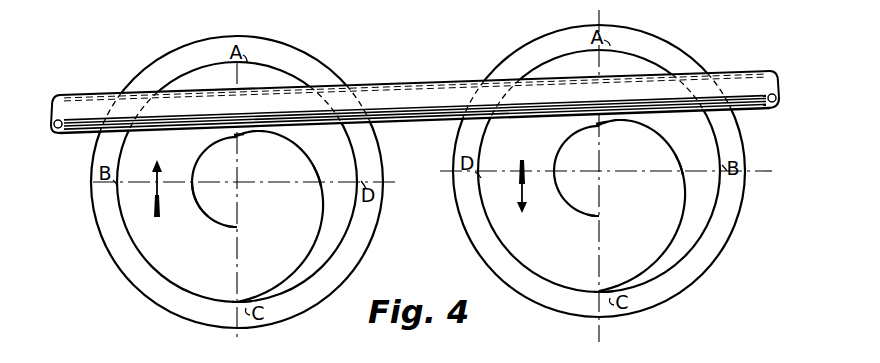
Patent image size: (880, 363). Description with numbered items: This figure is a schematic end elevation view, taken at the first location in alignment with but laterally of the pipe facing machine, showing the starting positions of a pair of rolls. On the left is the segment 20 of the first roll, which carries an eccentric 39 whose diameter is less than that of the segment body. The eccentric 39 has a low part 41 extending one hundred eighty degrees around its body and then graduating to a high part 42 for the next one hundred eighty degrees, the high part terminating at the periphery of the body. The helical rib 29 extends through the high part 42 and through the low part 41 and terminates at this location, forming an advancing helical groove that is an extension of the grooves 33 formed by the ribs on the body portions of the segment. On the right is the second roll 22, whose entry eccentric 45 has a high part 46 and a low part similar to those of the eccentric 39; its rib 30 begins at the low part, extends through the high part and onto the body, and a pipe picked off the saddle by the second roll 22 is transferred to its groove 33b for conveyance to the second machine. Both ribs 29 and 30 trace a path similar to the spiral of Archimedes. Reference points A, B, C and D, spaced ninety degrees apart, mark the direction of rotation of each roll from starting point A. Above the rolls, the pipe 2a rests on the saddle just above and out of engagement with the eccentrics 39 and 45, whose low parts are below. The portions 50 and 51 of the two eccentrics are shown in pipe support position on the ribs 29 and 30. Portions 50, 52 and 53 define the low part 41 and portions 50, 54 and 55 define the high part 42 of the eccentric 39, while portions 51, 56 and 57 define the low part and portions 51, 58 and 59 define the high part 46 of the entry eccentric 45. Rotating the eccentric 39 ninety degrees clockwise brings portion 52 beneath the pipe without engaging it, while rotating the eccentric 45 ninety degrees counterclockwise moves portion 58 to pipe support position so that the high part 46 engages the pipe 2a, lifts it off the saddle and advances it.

The pipe 2a is at (423, 82).
The segment 20 is at (192, 282).
The second roll 22 is at (568, 278).
The helical rib 29 is at (206, 152).
The rib 30 is at (573, 137).
The helical groove 33 is at (146, 262).
The groove 33b is at (708, 226).
The eccentric 39 is at (288, 216).
The low part 41 is at (207, 207).
The high part 42 is at (290, 163).
The entry eccentric 45 is at (649, 205).
The high part 46 is at (662, 153).
The portion 50 is at (244, 134).
The portion 51 is at (604, 122).
The portion 52 is at (191, 182).
The portion 53 is at (236, 230).
The portion 54 is at (314, 180).
The portion 55 is at (244, 302).
The portion 56 is at (555, 173).
The portion 57 is at (598, 219).
The portion 58 is at (674, 168).
The portion 59 is at (607, 293).